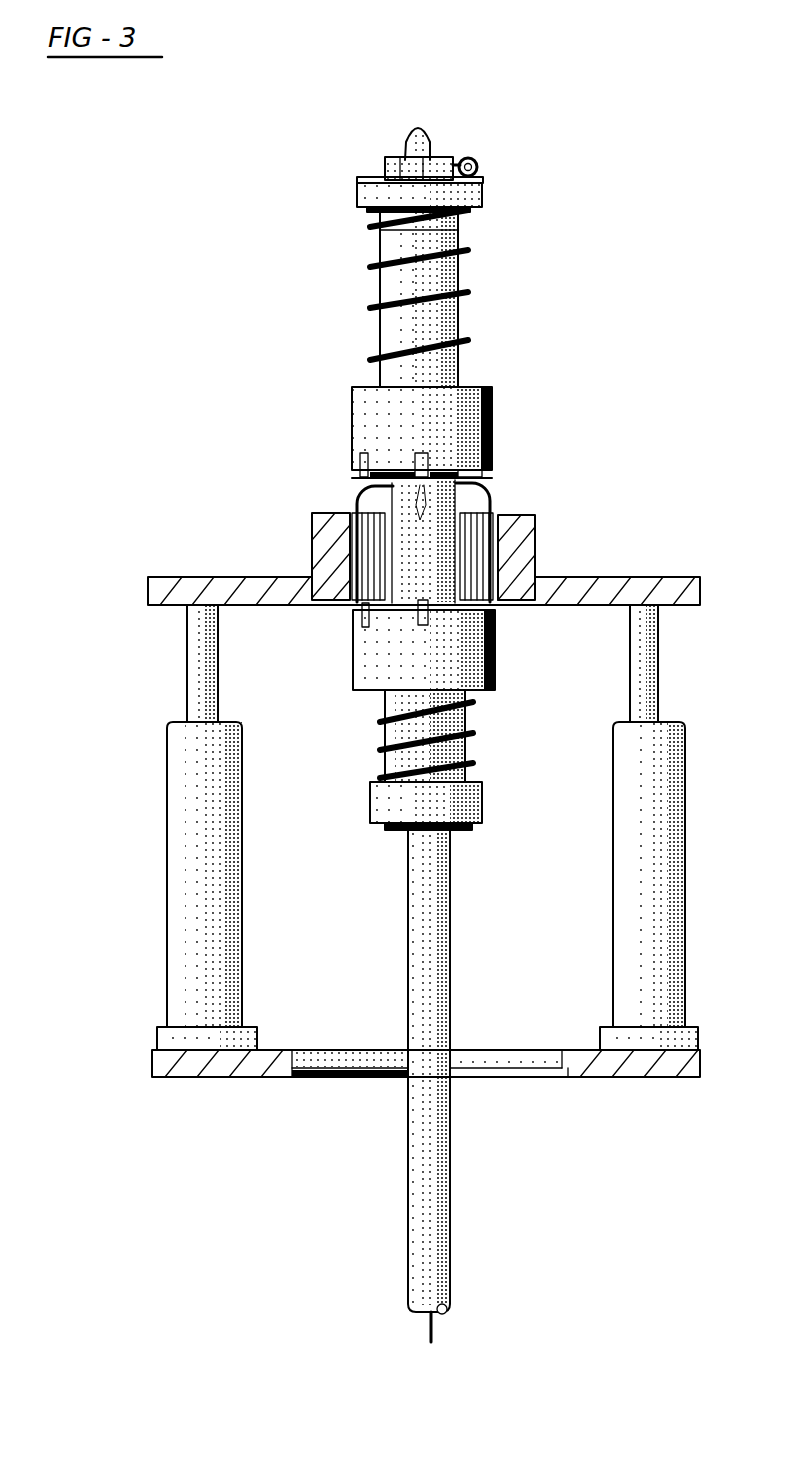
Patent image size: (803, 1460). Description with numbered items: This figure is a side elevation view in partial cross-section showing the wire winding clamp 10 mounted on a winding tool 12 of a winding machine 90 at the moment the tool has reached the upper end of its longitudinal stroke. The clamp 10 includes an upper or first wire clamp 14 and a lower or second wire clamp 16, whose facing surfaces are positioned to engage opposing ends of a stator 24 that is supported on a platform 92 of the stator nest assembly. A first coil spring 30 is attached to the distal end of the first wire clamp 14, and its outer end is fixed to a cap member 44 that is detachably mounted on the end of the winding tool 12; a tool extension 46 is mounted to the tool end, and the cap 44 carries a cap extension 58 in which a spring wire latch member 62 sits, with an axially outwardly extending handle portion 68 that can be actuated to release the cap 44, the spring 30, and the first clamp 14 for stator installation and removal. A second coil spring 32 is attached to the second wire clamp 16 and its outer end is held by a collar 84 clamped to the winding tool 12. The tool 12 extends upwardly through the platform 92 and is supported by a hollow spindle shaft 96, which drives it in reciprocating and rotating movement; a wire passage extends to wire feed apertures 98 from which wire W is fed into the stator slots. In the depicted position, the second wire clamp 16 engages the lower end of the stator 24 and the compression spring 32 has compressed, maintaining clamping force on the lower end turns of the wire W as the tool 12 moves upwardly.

The wire winding clamp 10 is at (342, 458).
The winding tool 12 is at (460, 322).
The first wire clamp 14 is at (480, 410).
The second wire clamp 16 is at (497, 665).
The stator 24 is at (510, 510).
The first coil spring 30 is at (380, 300).
The second coil spring 32 is at (470, 733).
The cap member 44 is at (484, 197).
The tool extension 46 is at (460, 226).
The cap extension 58 is at (453, 160).
The latch member 62 is at (358, 177).
The handle portion 68 is at (480, 163).
The collar 84 is at (378, 792).
The winding machine 90 is at (573, 530).
The platform 92 is at (663, 577).
The hollow spindle shaft 96 is at (452, 907).
The wire feed apertures 98 is at (392, 487).
The wire W is at (354, 492).